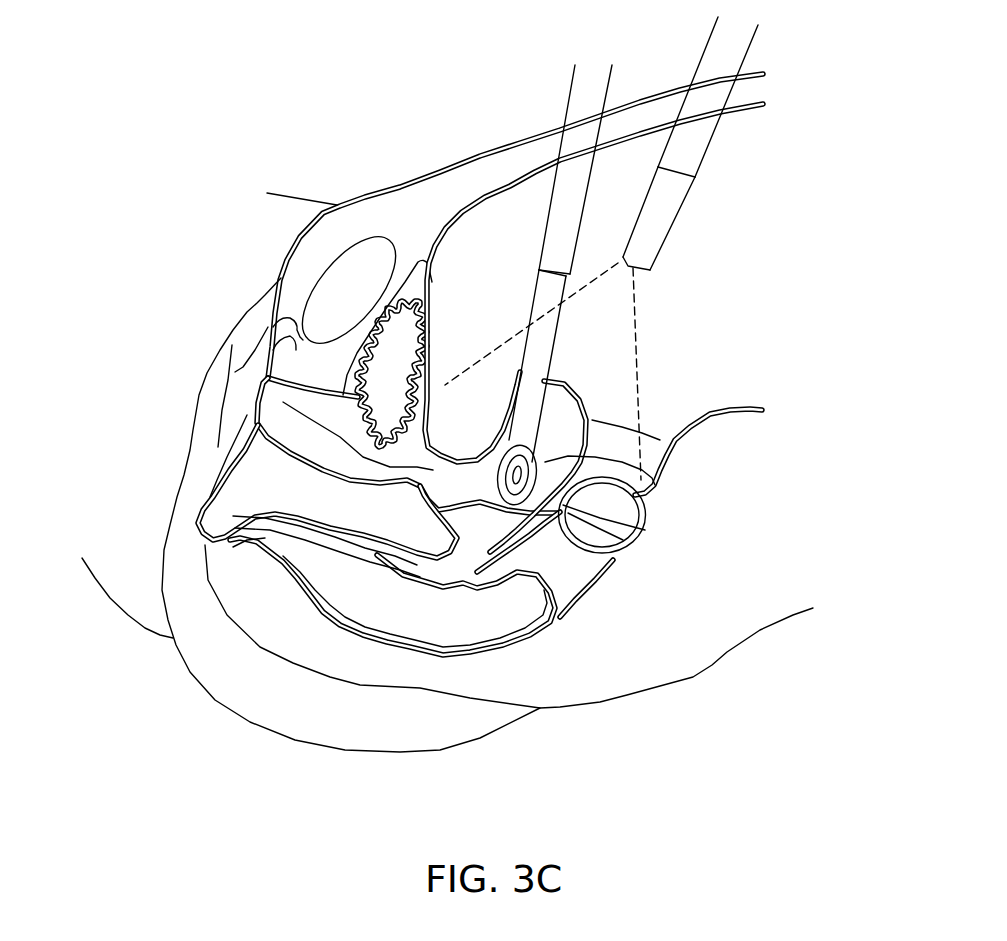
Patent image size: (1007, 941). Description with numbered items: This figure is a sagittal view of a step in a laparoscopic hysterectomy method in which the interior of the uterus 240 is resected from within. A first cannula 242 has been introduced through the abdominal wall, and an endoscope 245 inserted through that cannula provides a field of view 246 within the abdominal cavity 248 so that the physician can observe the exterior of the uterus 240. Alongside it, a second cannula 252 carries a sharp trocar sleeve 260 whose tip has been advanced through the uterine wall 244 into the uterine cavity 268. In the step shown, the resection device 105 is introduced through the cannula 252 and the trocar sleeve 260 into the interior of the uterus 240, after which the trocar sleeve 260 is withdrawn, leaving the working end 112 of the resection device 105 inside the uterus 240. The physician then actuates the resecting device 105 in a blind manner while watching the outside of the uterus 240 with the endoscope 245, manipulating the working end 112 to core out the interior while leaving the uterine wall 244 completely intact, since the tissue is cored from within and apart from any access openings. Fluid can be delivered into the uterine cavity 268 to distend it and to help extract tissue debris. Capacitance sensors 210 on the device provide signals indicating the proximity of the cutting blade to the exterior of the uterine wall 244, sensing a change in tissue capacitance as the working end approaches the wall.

The second cannula 252 is at (585, 81).
The abdominal cavity 248 is at (507, 210).
The first sleeve or cannula 242 is at (692, 142).
The endoscope 245 is at (657, 230).
The trocar sleeve 260 is at (538, 302).
The resection device 105 is at (542, 357).
The working end 112 is at (510, 447).
The field of view 246 is at (642, 358).
The uterus 240 is at (667, 443).
The uterine wall 244 is at (650, 476).
The capacitance sensors 210 is at (645, 527).
The uterine cavity 268 is at (613, 557).